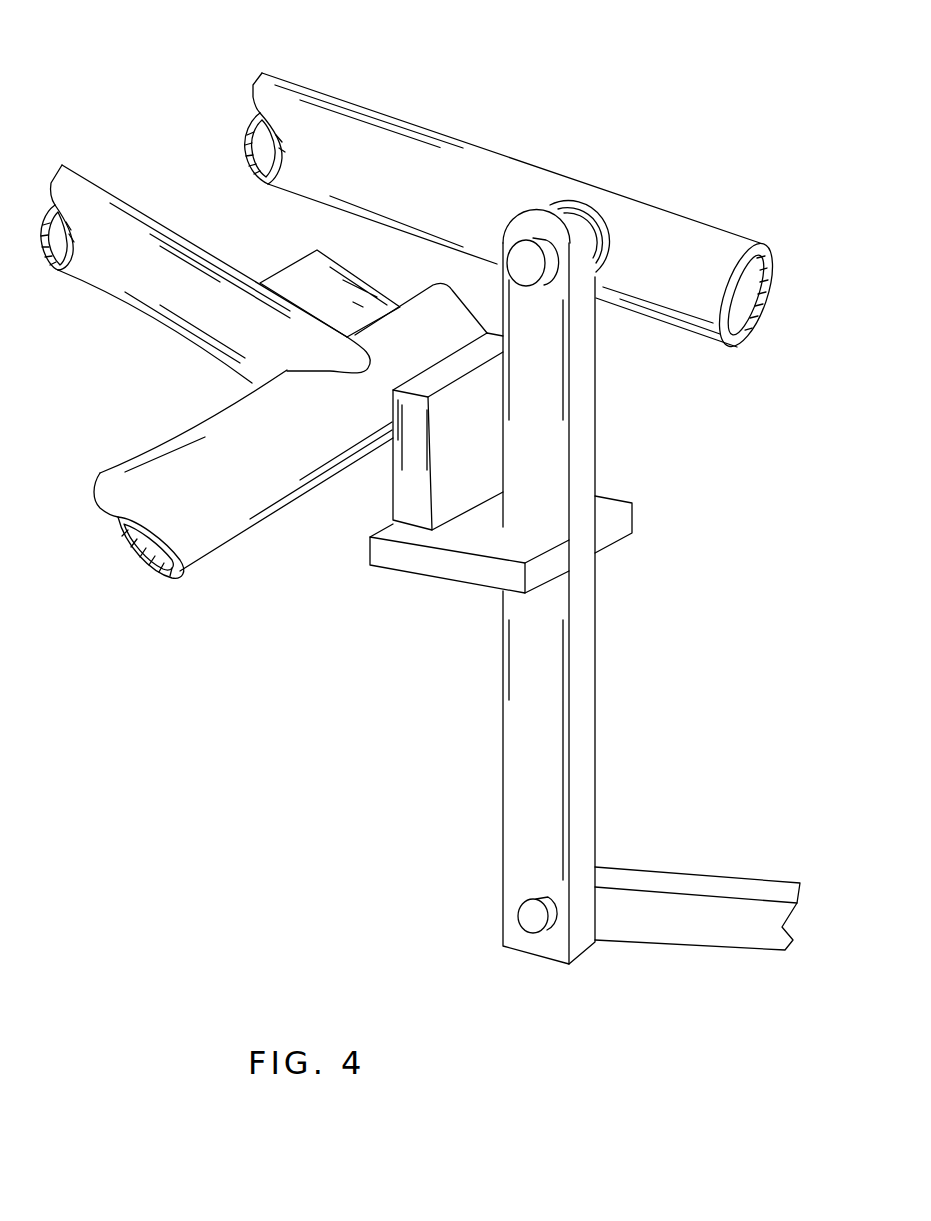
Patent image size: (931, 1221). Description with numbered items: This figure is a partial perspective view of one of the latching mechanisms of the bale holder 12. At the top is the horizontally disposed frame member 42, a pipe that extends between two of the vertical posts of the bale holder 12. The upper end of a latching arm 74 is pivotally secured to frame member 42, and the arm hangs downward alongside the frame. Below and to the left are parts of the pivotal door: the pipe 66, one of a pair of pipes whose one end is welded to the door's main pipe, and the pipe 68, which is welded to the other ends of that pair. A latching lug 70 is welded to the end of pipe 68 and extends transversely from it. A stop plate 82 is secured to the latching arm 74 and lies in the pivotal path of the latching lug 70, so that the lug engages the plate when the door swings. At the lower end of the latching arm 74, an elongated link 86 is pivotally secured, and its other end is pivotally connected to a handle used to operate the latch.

The bale holder 12 is at (583, 134).
The frame member 42 is at (642, 235).
The pipe 66 is at (172, 312).
The pipe 68 is at (217, 500).
The latching lug 70 is at (408, 472).
The latching arm 74 is at (578, 702).
The stop plate 82 is at (460, 568).
The elongated link 86 is at (683, 905).